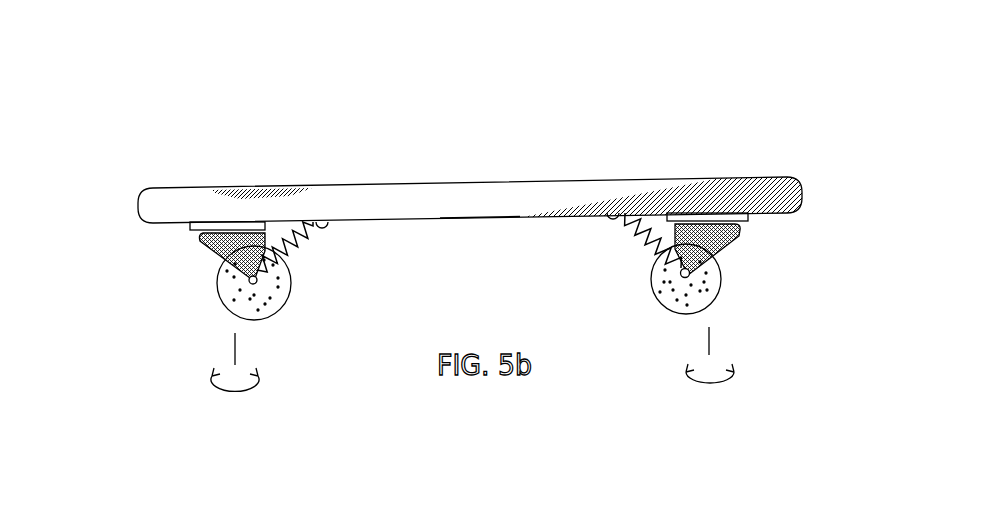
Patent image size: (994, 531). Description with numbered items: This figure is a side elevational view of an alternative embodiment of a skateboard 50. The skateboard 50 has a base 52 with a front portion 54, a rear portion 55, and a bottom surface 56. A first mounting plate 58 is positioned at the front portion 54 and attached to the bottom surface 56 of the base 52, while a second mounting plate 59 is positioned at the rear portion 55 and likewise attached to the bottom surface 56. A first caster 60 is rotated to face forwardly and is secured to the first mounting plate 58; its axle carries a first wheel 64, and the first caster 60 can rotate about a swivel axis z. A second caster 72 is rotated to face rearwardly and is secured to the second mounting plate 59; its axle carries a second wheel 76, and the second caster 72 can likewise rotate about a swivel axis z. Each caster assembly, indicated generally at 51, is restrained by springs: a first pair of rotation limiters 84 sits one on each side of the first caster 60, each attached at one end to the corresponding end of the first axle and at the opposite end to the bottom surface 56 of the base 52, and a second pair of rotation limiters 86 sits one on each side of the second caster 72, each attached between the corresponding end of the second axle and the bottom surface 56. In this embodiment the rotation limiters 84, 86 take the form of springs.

The skateboard 50 is at (543, 132).
The caster assembly 51 is at (475, 318).
The base 52 is at (432, 211).
The front portion 54 is at (240, 187).
The rear portion 55 is at (708, 177).
The bottom surface 56 is at (478, 219).
The first mounting plate 58 is at (190, 229).
The second mounting plate 59 is at (745, 216).
The first caster 60 is at (210, 245).
The first wheel 64 is at (291, 280).
The second caster 72 is at (735, 238).
The second wheel 76 is at (722, 280).
The first pair of rotation limiters 84 is at (313, 235).
The second pair of rotation limiters 86 is at (643, 255).